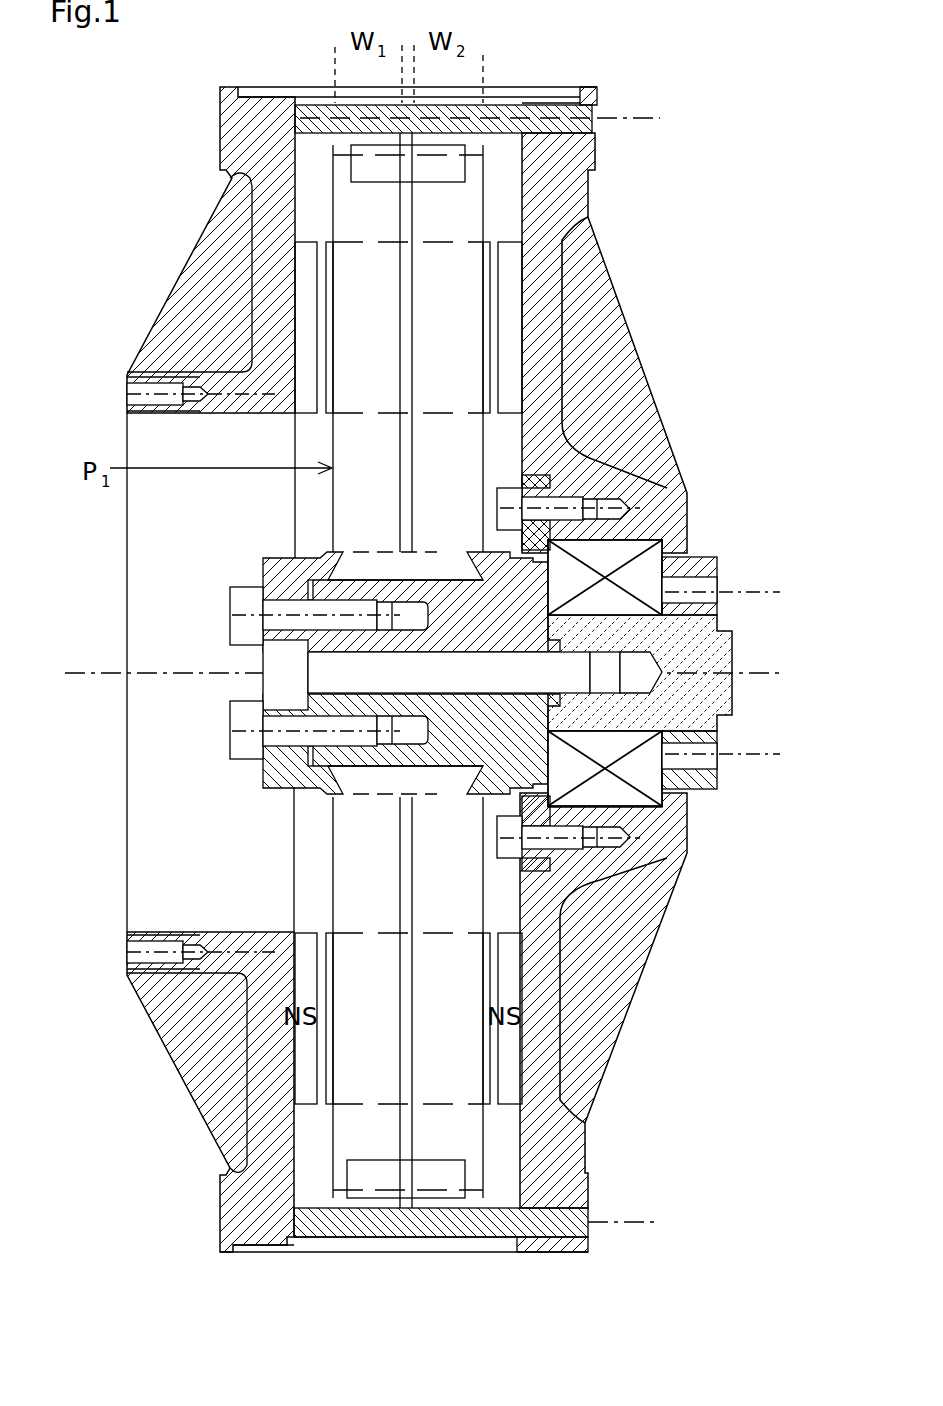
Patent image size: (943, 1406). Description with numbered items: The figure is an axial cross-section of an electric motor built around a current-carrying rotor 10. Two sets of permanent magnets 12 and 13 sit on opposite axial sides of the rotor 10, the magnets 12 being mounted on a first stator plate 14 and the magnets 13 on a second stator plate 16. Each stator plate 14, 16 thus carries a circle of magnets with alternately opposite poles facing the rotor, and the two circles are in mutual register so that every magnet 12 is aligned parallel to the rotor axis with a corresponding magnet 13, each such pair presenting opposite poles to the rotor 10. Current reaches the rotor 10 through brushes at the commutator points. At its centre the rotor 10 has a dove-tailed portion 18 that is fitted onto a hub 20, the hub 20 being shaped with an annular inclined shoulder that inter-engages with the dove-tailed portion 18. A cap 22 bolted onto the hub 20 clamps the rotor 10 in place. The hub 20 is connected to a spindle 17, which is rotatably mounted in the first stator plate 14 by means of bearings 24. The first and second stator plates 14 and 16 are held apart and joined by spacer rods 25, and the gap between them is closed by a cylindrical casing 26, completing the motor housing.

The rotor 10 is at (400, 1205).
The permanent magnets 12 is at (510, 1050).
The permanent magnets 13 is at (307, 1062).
The first stator plate 14 is at (580, 162).
The second stator plate 16 is at (250, 133).
The spindle 17 is at (735, 643).
The dove-tailed portion 18 is at (420, 580).
The hub 20 is at (500, 484).
The cap 22 is at (262, 573).
The bearings 24 is at (635, 547).
The spacer rods 25 is at (340, 1230).
The cylindrical casing 26 is at (545, 1256).